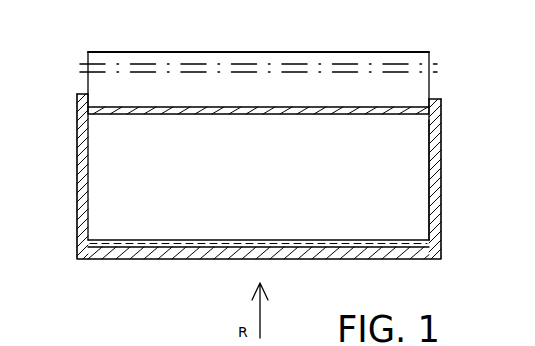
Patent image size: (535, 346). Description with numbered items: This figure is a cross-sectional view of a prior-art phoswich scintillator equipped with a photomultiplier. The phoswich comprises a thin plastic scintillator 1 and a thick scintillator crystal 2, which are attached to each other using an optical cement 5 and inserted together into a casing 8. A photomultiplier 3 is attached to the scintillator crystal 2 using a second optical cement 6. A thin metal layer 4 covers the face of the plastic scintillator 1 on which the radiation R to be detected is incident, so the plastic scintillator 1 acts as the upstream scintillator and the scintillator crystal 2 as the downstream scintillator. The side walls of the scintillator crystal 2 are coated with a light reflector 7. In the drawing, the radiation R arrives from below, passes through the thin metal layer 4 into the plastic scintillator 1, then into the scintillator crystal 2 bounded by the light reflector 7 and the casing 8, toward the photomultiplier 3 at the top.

The plastic scintillator 1 is at (149, 253).
The scintillator crystal 2 is at (417, 198).
The photomultiplier 3 is at (125, 82).
The thin metal layer 4 is at (196, 253).
The optical cement 5 is at (110, 238).
The optical cement 6 is at (355, 109).
The light reflector 7 is at (436, 162).
The casing 8 is at (77, 131).